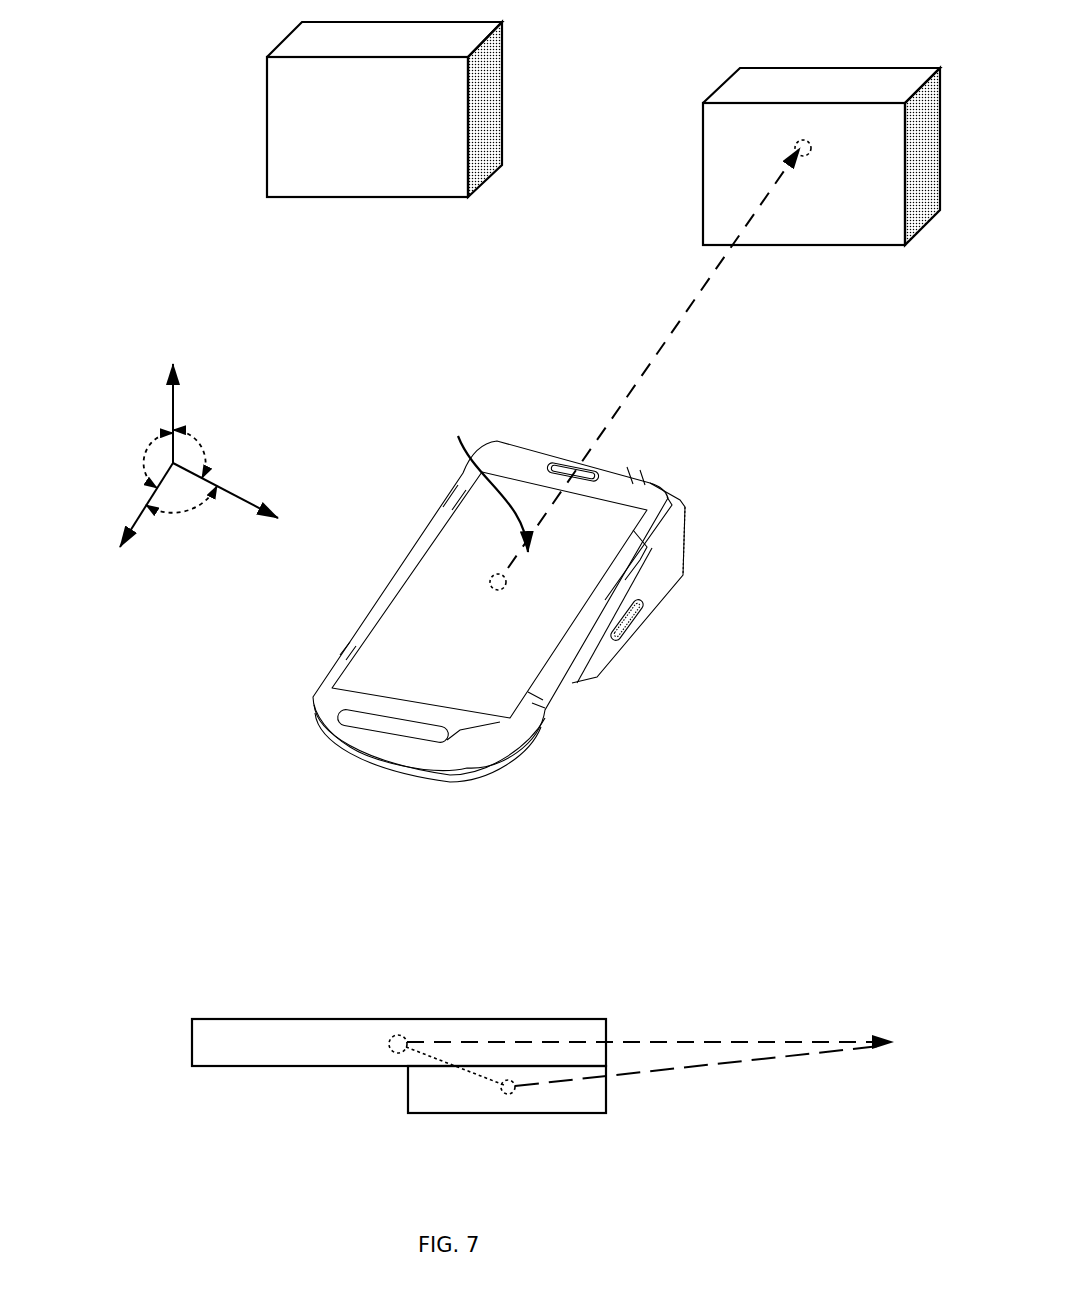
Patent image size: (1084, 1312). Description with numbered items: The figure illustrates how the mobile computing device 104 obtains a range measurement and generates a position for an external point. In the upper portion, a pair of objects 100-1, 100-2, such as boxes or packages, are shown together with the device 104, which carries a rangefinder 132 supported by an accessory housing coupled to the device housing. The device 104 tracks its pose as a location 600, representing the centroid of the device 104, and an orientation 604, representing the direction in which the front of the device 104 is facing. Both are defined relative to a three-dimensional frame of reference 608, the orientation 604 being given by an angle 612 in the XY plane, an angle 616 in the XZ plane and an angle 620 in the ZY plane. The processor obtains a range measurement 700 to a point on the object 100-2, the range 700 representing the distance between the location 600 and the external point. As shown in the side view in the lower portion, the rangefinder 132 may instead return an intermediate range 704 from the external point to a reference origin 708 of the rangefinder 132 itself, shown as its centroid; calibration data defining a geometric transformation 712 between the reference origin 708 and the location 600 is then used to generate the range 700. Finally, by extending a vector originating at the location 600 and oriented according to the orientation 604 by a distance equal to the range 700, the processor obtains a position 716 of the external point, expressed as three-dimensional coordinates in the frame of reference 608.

The object 100-1 is at (503, 53).
The object 100-2 is at (845, 68).
The mobile computing device 104 is at (311, 692).
The rangefinder 132 is at (683, 589).
The location 600 is at (488, 582).
The orientation 604 is at (484, 480).
The three-dimensional frame of reference 608 is at (170, 355).
The angle in the XY plane 612 is at (212, 454).
The angle in the XZ plane 616 is at (181, 516).
The angle in the ZY plane 620 is at (142, 460).
The range measurement 700 is at (650, 595).
The range 704 is at (697, 1074).
The reference origin of the rangefinder 708 is at (507, 1097).
The geometric transformation 712 is at (435, 1057).
The position 716 is at (801, 138).